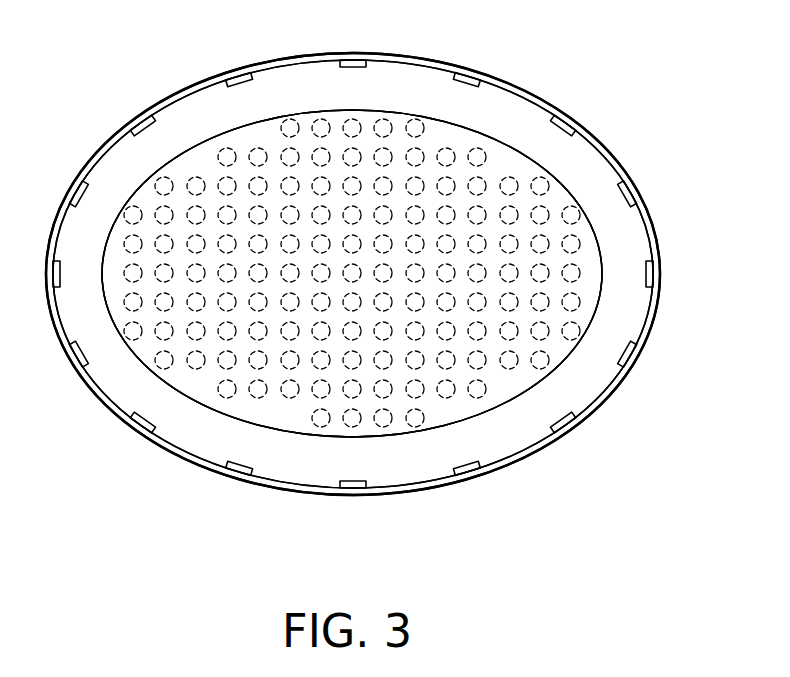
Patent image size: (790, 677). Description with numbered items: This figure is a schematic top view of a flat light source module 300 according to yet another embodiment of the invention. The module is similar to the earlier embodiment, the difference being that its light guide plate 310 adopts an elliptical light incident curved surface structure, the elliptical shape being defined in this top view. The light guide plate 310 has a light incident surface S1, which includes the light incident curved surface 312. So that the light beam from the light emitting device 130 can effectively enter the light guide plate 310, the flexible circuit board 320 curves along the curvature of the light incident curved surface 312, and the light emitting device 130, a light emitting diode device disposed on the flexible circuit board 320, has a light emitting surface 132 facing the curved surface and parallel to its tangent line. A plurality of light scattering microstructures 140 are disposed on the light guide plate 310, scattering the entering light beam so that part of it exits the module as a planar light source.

The flat light source module 300 is at (617, 499).
The light emitting device 130 is at (573, 427).
The light emitting surface 132 is at (616, 350).
The flexible circuit board 320 is at (620, 381).
The light guide plate 310 is at (207, 383).
The light incident curved surface 312 is at (128, 352).
The light scattering microstructures 140 is at (221, 396).
The light incident surface S1 is at (208, 134).